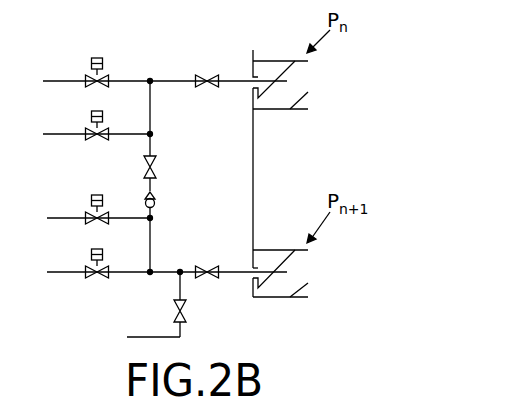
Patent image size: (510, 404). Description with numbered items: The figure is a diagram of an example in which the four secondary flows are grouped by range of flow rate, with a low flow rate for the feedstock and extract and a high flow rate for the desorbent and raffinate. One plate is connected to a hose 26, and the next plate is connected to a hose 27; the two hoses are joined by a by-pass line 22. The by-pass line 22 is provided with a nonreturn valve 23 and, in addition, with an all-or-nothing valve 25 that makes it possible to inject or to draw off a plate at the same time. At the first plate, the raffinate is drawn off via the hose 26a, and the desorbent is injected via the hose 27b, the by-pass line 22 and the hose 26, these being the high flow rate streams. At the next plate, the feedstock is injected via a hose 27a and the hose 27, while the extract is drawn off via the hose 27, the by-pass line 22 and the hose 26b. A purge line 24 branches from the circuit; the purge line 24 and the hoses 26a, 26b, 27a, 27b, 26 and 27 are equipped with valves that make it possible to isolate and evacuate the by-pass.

The hose 26a is at (70, 81).
The hose 26b is at (70, 134).
The hose 27a is at (70, 218).
The hose 27b is at (70, 272).
The by-pass line 22 is at (153, 144).
The all-or-nothing valve 25 is at (155, 167).
The nonreturn valve 23 is at (155, 198).
The hose 26 is at (240, 81).
The hose 27 is at (238, 270).
The purge line 24 is at (180, 337).